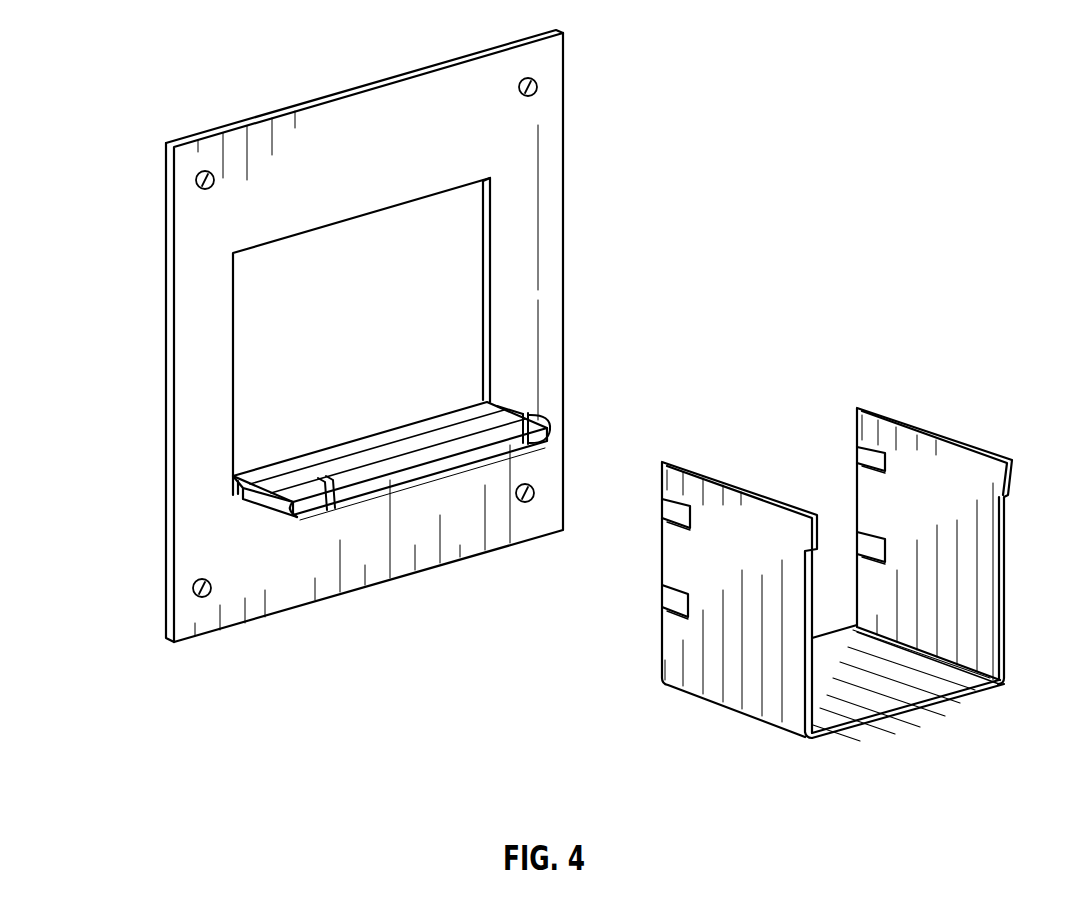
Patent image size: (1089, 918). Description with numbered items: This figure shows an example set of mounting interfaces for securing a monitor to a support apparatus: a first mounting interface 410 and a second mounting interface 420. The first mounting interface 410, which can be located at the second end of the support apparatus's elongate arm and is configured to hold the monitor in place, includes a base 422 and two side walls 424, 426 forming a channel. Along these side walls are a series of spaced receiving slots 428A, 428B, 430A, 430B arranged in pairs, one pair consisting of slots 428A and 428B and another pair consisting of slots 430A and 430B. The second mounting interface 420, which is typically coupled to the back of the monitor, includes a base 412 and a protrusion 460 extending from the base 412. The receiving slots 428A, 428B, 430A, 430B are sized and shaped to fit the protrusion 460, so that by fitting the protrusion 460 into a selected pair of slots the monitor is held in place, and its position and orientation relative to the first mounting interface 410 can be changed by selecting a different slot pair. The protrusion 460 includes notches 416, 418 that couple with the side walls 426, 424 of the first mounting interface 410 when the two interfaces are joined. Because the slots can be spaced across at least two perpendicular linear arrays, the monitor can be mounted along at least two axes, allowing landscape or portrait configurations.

The first mounting interface 410 is at (977, 425).
The base 412 is at (545, 148).
The notch 416 is at (547, 452).
The notch 418 is at (332, 496).
The second mounting interface 420 is at (240, 92).
The base 422 is at (890, 700).
The side wall 424 is at (987, 585).
The side wall 426 is at (718, 693).
The receiving slot 428A is at (668, 598).
The receiving slot 428B is at (866, 540).
The receiving slot 430A is at (670, 504).
The receiving slot 430B is at (870, 452).
The protrusion 460 is at (437, 466).